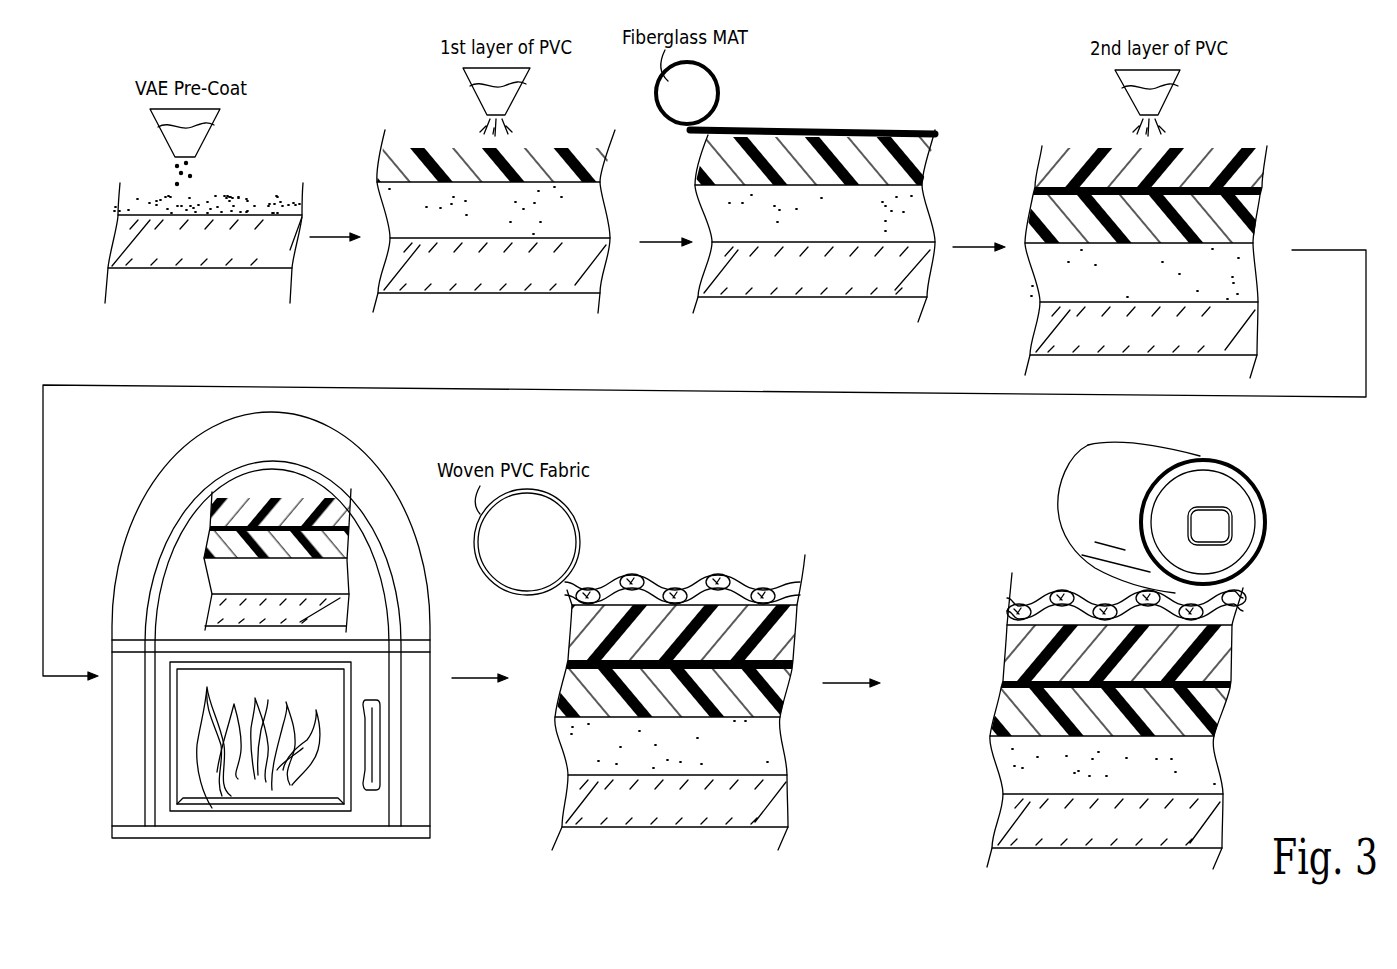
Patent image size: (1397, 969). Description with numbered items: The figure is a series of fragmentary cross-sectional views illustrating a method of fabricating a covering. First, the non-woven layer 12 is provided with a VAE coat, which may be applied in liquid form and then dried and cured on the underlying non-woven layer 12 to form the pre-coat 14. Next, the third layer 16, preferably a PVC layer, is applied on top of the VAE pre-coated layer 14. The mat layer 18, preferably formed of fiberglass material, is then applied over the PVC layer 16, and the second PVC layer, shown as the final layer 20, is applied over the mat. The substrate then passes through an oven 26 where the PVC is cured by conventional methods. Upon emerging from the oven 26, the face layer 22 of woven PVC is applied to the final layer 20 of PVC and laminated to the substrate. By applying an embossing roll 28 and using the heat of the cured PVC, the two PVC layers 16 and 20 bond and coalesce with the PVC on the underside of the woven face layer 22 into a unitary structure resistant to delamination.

The non-woven layer 12 is at (212, 268).
The pre-coat 14 is at (390, 206).
The third layer 16 is at (403, 158).
The mat layer 18 is at (776, 127).
The final layer 20 is at (1226, 160).
The face layer 22 is at (563, 588).
The oven 26 is at (430, 585).
The embossing roll 28 is at (1075, 488).